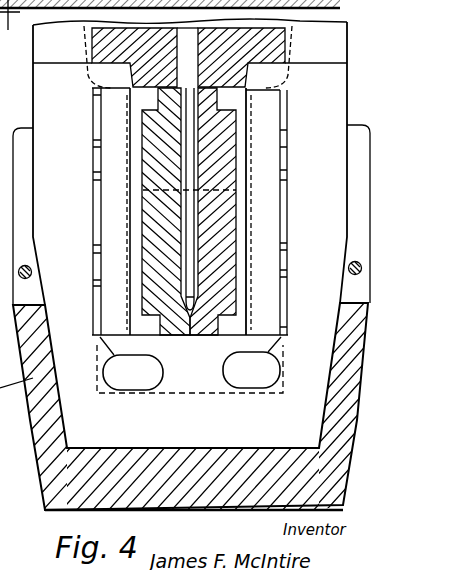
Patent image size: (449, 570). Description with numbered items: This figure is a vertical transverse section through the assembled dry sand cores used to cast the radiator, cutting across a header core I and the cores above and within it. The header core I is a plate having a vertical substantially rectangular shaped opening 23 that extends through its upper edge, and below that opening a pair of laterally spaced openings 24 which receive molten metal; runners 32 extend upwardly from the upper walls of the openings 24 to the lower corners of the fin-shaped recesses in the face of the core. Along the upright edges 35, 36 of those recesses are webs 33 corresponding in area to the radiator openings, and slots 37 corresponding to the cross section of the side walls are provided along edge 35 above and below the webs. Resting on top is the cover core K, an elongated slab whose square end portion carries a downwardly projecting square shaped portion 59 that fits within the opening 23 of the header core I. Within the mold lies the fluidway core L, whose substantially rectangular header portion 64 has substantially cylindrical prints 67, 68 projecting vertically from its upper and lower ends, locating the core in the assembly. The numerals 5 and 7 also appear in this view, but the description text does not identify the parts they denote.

The top bar 5 is at (170, 16).
The header core I is at (40, 102).
The square shaped portion 59 is at (145, 70).
The cover core K is at (272, 43).
The cylindrical print 67 is at (220, 322).
The cylindrical print 68 is at (213, 97).
The header portion 64 is at (172, 224).
The upright edge 35 is at (95, 156).
The slot 37 is at (96, 212).
The rectangular shaped opening 23 is at (238, 118).
The upright edge 36 is at (288, 218).
The web 33 is at (283, 258).
The opening 24 is at (191, 371).
The runner 32 is at (281, 351).
The clamp 7 is at (16, 258).